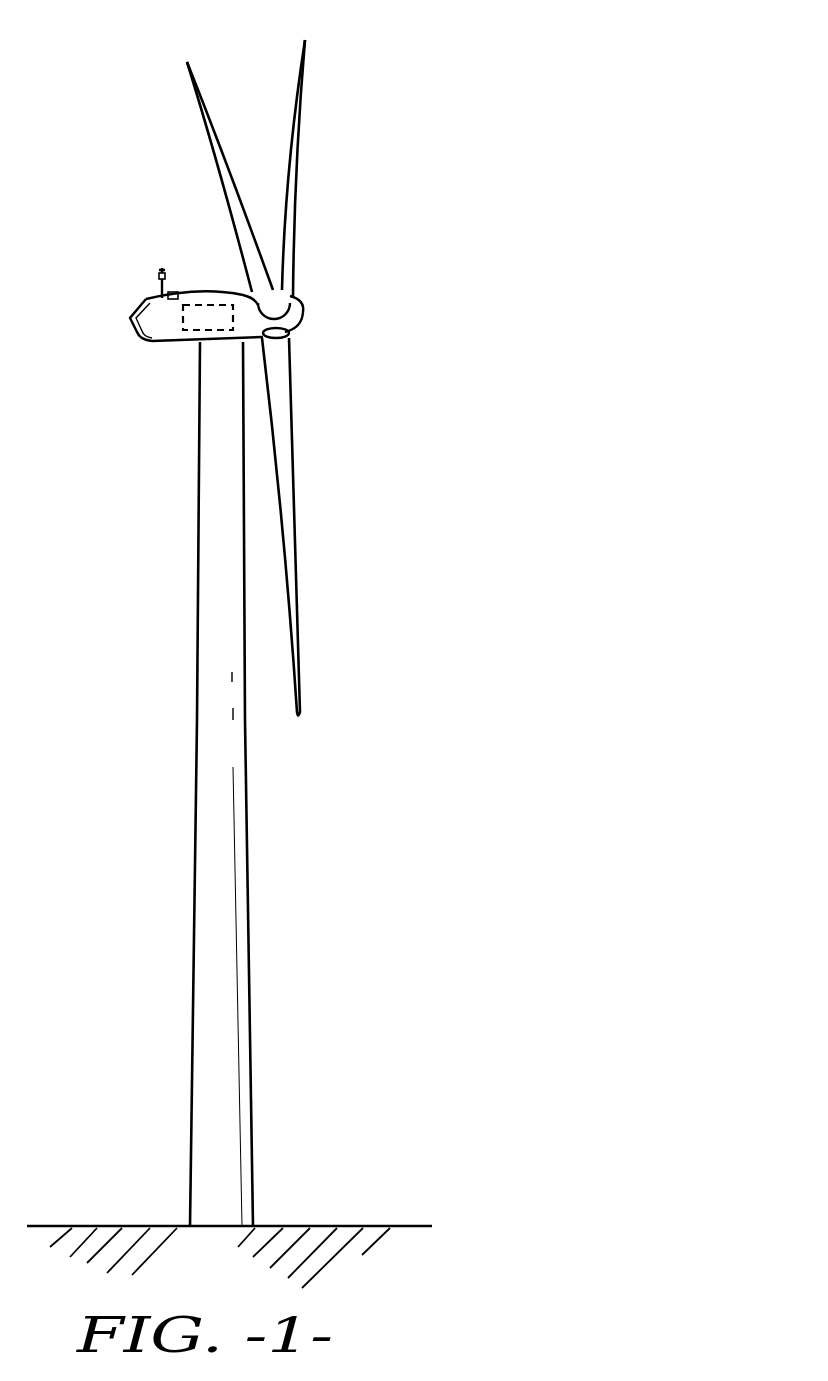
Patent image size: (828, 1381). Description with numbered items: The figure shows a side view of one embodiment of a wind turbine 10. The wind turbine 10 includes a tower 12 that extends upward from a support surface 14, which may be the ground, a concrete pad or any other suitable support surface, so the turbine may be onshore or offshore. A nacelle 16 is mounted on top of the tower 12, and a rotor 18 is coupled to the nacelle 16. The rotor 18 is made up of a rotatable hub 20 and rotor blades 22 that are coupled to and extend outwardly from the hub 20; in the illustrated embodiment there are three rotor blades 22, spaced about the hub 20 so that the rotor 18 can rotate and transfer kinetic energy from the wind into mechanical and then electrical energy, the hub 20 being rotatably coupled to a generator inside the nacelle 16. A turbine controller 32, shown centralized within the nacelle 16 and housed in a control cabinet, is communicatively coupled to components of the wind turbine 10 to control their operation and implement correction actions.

The wind turbine 10 is at (433, 124).
The tower 12 is at (205, 905).
The support surface 14 is at (115, 1226).
The nacelle 16 is at (163, 330).
The rotor 18 is at (307, 293).
The rotatable hub 20 is at (303, 317).
The rotor blade 22 is at (297, 83).
The turbine controller 32 is at (220, 330).